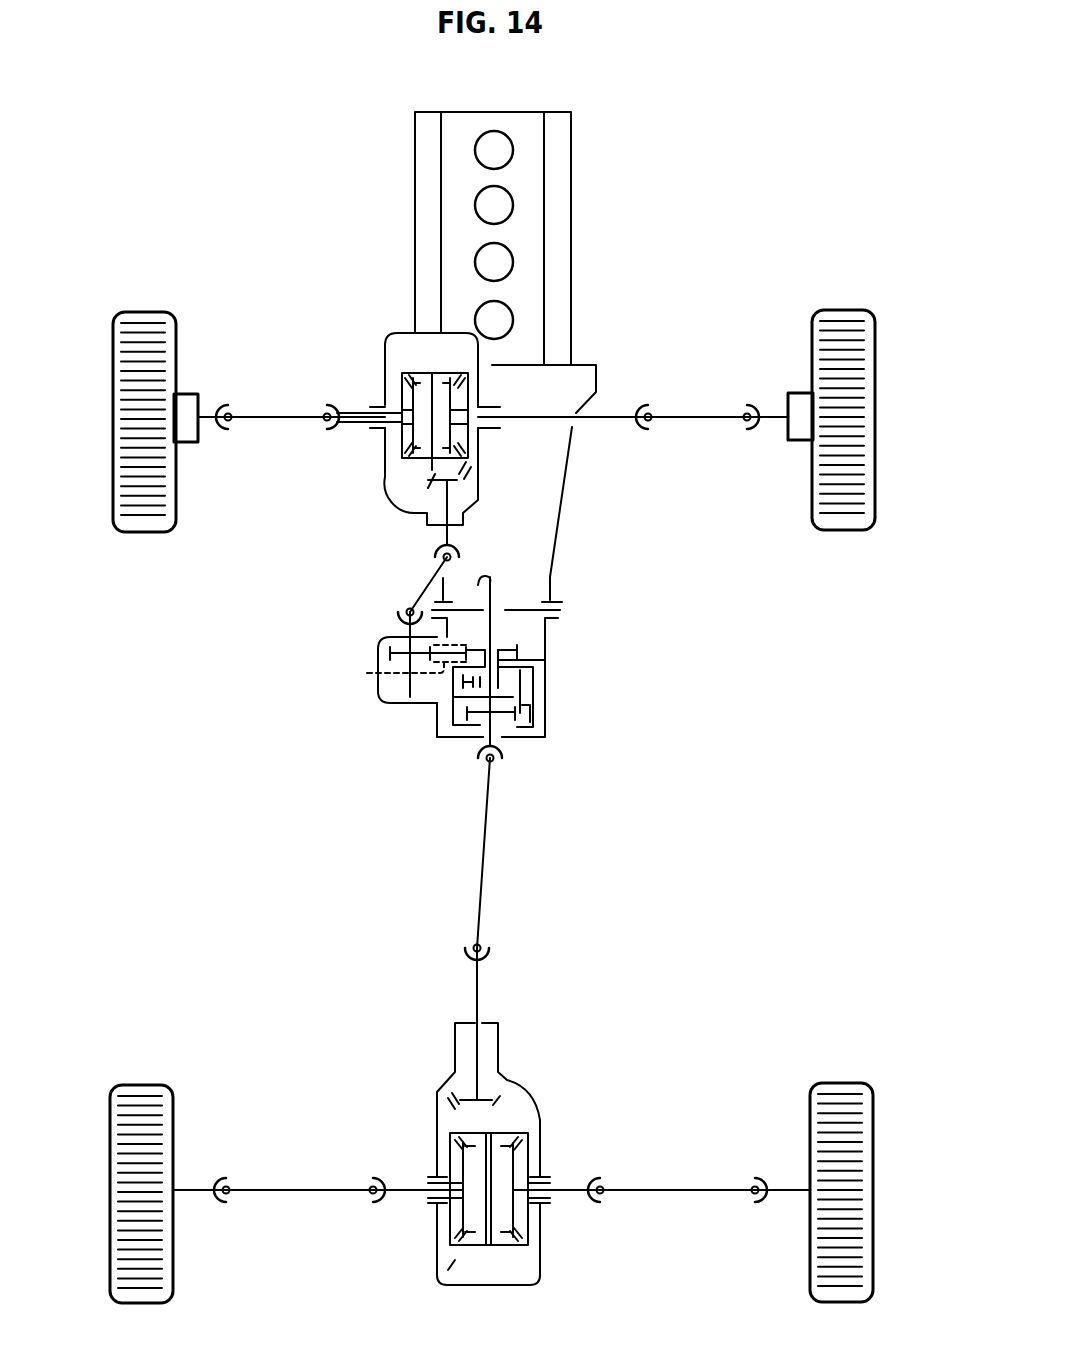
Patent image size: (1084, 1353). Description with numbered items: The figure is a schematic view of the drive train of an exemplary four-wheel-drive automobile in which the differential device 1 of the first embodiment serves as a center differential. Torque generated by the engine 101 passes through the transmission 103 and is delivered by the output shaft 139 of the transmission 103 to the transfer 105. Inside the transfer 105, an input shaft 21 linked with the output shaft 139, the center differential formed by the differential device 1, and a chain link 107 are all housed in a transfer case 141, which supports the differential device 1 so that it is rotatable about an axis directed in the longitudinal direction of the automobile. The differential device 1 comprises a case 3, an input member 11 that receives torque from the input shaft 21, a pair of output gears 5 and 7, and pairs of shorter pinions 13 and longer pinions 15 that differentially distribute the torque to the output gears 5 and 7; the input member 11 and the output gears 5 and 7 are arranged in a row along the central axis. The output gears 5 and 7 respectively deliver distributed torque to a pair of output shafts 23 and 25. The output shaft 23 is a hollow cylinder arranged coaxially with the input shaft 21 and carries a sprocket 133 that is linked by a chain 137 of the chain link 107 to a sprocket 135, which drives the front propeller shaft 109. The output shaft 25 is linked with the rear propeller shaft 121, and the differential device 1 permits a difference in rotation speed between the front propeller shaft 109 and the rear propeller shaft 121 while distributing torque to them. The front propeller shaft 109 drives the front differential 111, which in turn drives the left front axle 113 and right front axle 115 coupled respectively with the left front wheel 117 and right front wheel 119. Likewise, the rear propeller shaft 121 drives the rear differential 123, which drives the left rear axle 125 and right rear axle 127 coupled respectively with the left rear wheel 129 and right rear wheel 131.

The differential device 1 is at (642, 733).
The case 3 is at (540, 694).
The output gear 5 is at (527, 672).
The output gear 7 is at (465, 735).
The input member 11 is at (440, 738).
The shorter pinion 13 is at (437, 707).
The longer pinion 15 is at (545, 727).
The input shaft 21 is at (503, 598).
The output shaft 23 is at (500, 677).
The output shaft 25 is at (497, 730).
The engine 101 is at (530, 174).
The transmission 103 is at (550, 473).
The transfer 105 is at (617, 665).
The chain link 107 is at (358, 658).
The front propeller shaft 109 is at (427, 583).
The front differential 111 is at (402, 463).
The left front axle 113 is at (292, 380).
The right front axle 115 is at (705, 369).
The left front wheel 117 is at (135, 310).
The right front wheel 119 is at (845, 310).
The rear propeller shaft 121 is at (487, 836).
The rear differential 123 is at (528, 1124).
The left rear axle 125 is at (292, 1168).
The right rear axle 127 is at (680, 1161).
The left rear wheel 129 is at (140, 1085).
The right rear wheel 131 is at (841, 1083).
The sprocket 133 is at (520, 655).
The sprocket 135 is at (380, 647).
The chain 137 is at (367, 673).
The output shaft 139 is at (498, 623).
The transfer case 141 is at (548, 621).